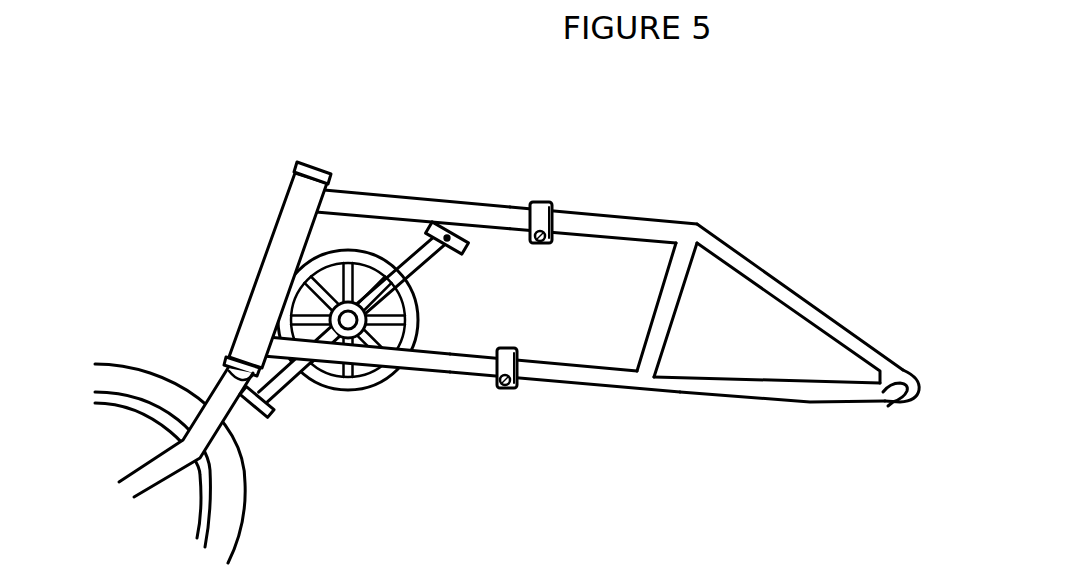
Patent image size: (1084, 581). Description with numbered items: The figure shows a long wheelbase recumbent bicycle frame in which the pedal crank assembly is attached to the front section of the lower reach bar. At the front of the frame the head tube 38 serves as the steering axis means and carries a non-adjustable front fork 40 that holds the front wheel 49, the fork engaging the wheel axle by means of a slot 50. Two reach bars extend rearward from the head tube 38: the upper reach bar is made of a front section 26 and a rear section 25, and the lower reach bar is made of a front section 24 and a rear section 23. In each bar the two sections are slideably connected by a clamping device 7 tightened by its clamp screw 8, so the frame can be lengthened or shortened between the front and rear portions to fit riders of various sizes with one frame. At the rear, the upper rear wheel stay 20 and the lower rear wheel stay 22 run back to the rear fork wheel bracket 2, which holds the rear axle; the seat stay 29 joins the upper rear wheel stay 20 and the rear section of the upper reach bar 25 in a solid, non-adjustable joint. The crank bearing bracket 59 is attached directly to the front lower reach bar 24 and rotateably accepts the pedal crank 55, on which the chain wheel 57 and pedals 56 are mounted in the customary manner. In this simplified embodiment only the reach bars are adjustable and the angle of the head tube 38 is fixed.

The rear fork wheel bracket 2 is at (900, 373).
The clamping device 7 is at (541, 212).
The clamp screw 8 is at (547, 242).
The upper rear wheel stay 20 is at (763, 278).
The lower rear wheel stay 22 is at (750, 392).
The rear section of lower reach bar 23 is at (573, 373).
The front section of lower reach bar 24 is at (435, 362).
The rear section of upper reach bar 25 is at (593, 222).
The front section of upper reach bar 26 is at (435, 200).
The seat stay 29 is at (668, 305).
The head tube 38 is at (270, 265).
The non-adjustable front fork 40 is at (207, 368).
The front wheel 49 is at (123, 378).
The slot 50 is at (884, 402).
The pedal crank 55 is at (277, 383).
The pedal 56 is at (466, 250).
The chain wheel 57 is at (352, 258).
The crank bearing bracket 59 is at (367, 317).